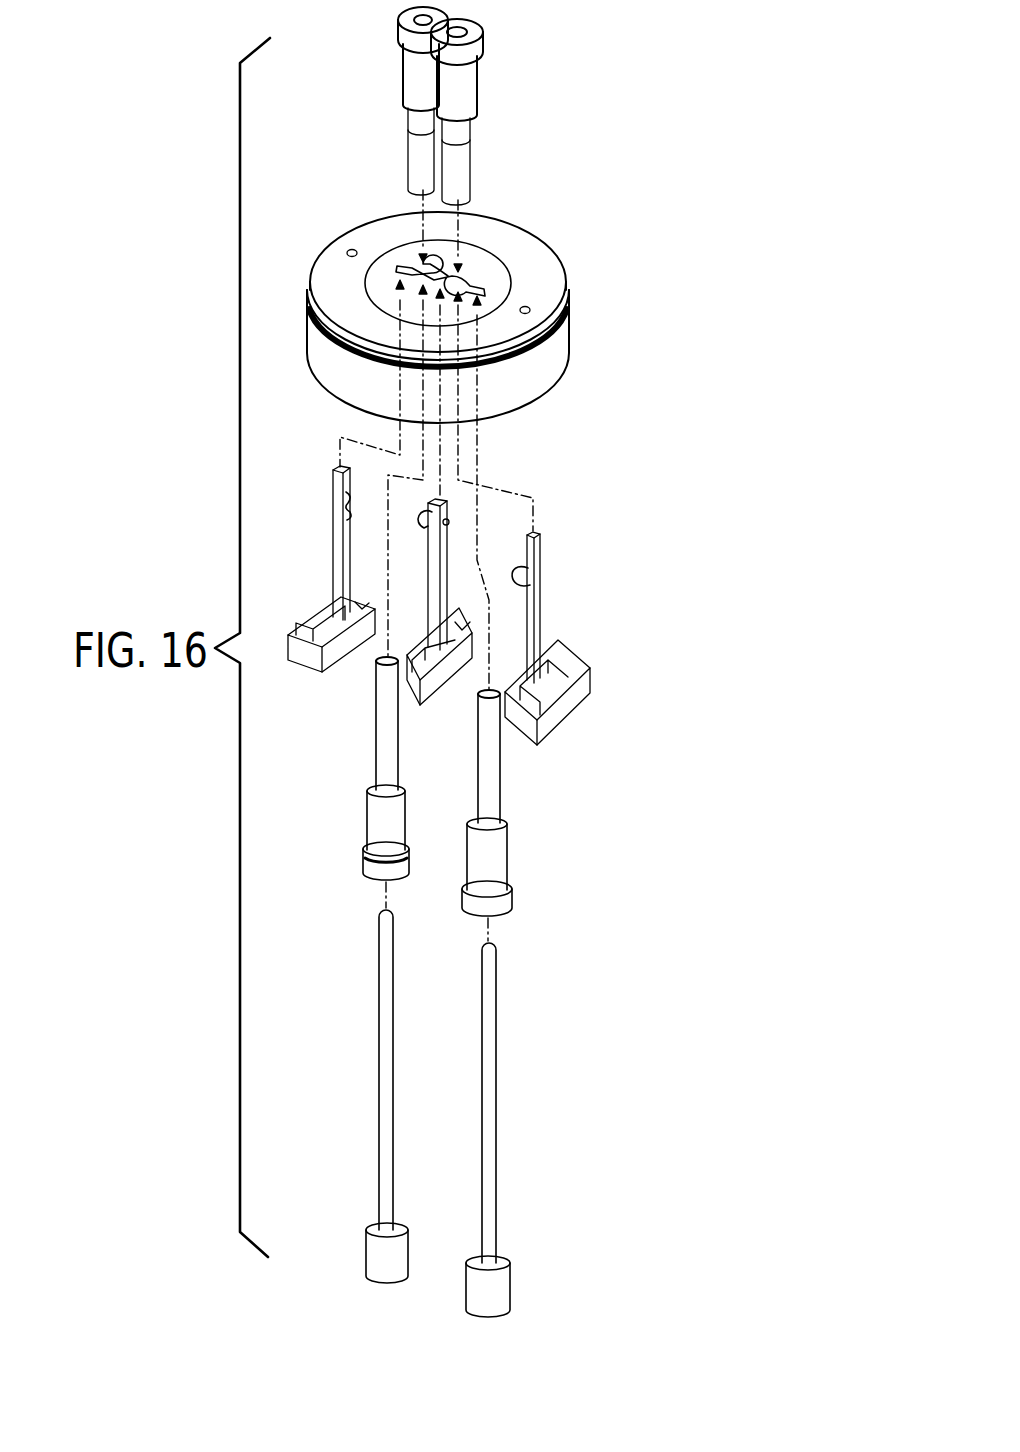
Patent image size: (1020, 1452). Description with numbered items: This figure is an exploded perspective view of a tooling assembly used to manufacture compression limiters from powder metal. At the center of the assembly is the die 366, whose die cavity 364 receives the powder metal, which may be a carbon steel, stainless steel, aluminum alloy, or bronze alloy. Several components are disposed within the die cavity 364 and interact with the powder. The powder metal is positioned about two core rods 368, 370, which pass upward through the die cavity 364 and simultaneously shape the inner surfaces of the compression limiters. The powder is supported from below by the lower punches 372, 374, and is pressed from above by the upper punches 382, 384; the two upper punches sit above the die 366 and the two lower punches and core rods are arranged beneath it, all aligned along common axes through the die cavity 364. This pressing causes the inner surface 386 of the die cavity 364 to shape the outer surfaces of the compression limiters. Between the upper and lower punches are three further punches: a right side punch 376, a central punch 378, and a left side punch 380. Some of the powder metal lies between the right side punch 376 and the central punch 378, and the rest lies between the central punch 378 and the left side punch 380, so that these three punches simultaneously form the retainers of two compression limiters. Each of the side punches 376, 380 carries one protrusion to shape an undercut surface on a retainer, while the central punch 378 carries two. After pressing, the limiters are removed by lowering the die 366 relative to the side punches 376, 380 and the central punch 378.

The die cavity 364 is at (455, 285).
The die 366 is at (472, 302).
The core rod 368 is at (496, 1106).
The core rod 370 is at (379, 1075).
The lower punch 372 is at (507, 852).
The lower punch 374 is at (368, 797).
The right side punch 376 is at (563, 638).
The central punch 378 is at (493, 613).
The left side punch 380 is at (315, 569).
The upper punch 382 is at (478, 72).
The upper punch 384 is at (405, 72).
The inner surface 386 is at (420, 265).